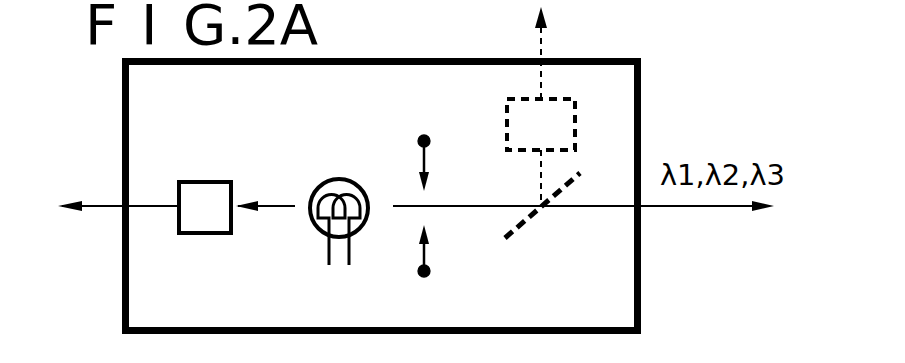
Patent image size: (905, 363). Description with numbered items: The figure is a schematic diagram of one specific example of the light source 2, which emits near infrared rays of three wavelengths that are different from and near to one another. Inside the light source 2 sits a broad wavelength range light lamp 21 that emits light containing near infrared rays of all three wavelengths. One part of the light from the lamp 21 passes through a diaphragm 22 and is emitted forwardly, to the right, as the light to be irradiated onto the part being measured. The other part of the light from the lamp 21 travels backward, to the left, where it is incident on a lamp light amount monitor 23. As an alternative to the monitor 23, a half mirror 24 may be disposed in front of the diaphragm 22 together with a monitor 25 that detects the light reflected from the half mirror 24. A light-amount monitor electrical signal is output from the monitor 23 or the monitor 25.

The light source 2 is at (452, 58).
The broad wavelength range light lamp 21 is at (336, 179).
The diaphragm 22 is at (427, 160).
The lamp light amount monitor 23 is at (194, 181).
The half mirror 24 is at (522, 222).
The monitor 25 is at (578, 131).